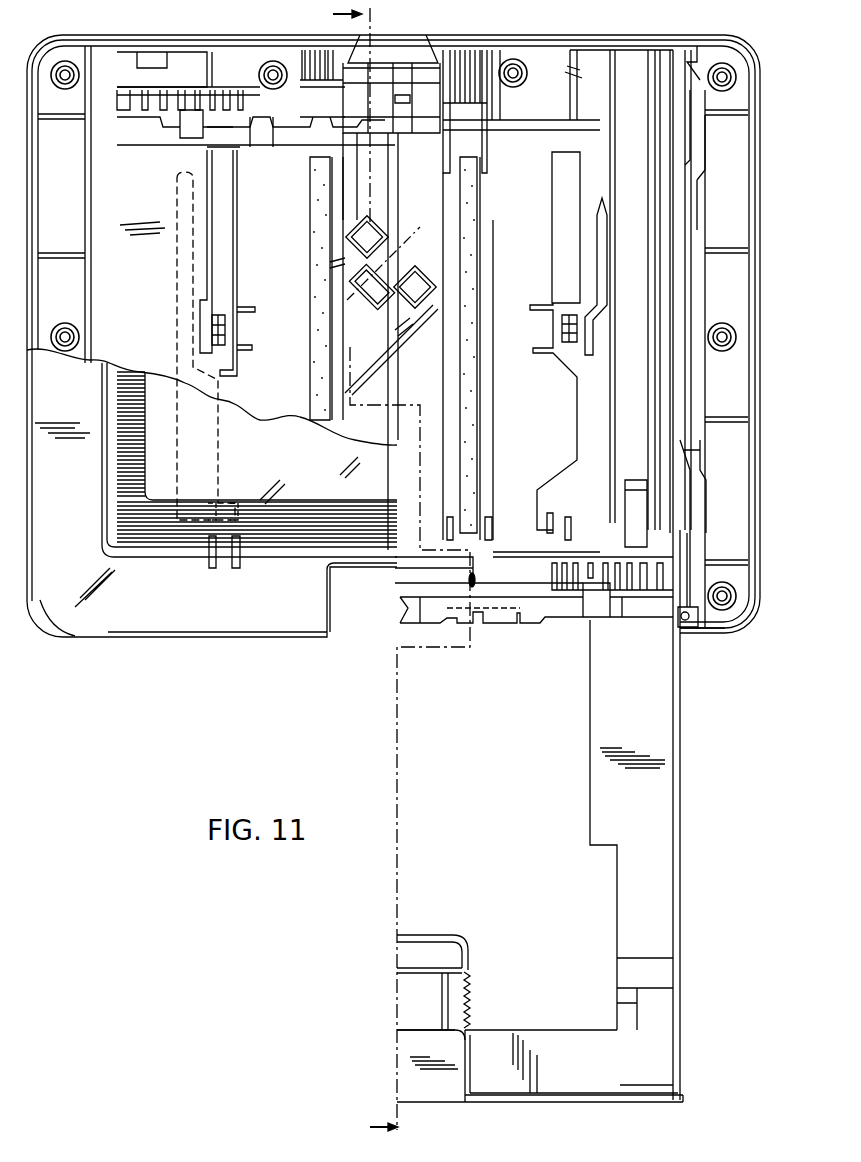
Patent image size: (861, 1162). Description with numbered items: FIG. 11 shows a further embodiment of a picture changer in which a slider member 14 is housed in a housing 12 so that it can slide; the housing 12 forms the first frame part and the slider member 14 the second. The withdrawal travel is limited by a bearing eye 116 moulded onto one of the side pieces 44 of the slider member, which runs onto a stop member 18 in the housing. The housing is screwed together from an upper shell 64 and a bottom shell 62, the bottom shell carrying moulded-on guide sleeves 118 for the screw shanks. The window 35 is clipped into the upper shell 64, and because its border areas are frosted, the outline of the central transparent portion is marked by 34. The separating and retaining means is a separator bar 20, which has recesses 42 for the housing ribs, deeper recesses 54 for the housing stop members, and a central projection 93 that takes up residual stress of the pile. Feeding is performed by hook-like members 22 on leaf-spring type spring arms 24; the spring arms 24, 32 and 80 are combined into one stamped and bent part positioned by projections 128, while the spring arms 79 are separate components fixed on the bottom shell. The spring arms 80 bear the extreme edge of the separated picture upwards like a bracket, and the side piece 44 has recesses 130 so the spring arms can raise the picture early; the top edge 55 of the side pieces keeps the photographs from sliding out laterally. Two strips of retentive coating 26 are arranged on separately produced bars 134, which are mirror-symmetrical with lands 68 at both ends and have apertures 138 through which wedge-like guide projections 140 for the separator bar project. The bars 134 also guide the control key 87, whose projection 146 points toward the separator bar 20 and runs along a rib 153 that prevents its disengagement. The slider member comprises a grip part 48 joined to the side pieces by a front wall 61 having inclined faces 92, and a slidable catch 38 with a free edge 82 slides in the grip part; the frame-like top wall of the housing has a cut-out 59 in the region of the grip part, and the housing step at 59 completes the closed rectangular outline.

The housing 12 is at (96, 640).
The slider member 14 is at (690, 768).
The stop member 18 is at (688, 630).
The separator bar 20 is at (292, 125).
The hook-like members 22 is at (215, 500).
The spring arms 24 is at (578, 395).
The retentive coating 26 is at (478, 258).
The spring arms 32 is at (230, 238).
The outline of central transparent portion of window 34 is at (280, 495).
The window 35 is at (340, 455).
The slidable catch 38 is at (400, 990).
The recesses 42 is at (258, 145).
The side pieces 44 is at (662, 733).
The grip part 48 is at (400, 1090).
The recesses 54 is at (188, 148).
The top edge 55 is at (682, 850).
The cut-out 59 is at (330, 597).
The front wall 61 is at (540, 1104).
The bottom shell 62 is at (748, 630).
The upper shell 64 is at (70, 628).
The lands 68 is at (488, 144).
The spring arms 79 is at (625, 515).
The spring arms 80 is at (183, 258).
The free edge 82 is at (418, 934).
The control key 87 is at (400, 48).
The inclined faces 92 is at (668, 970).
The projection 93 is at (385, 145).
The bearing eye 116 is at (700, 632).
The guide sleeves 118 is at (722, 352).
The projections 128 is at (565, 300).
The recesses 130 is at (640, 548).
The bar 134 is at (490, 385).
The apertures 138 is at (488, 520).
The guide or wedge-like projections 140 is at (493, 522).
The projection 146 is at (405, 100).
The rib 153 is at (392, 380).